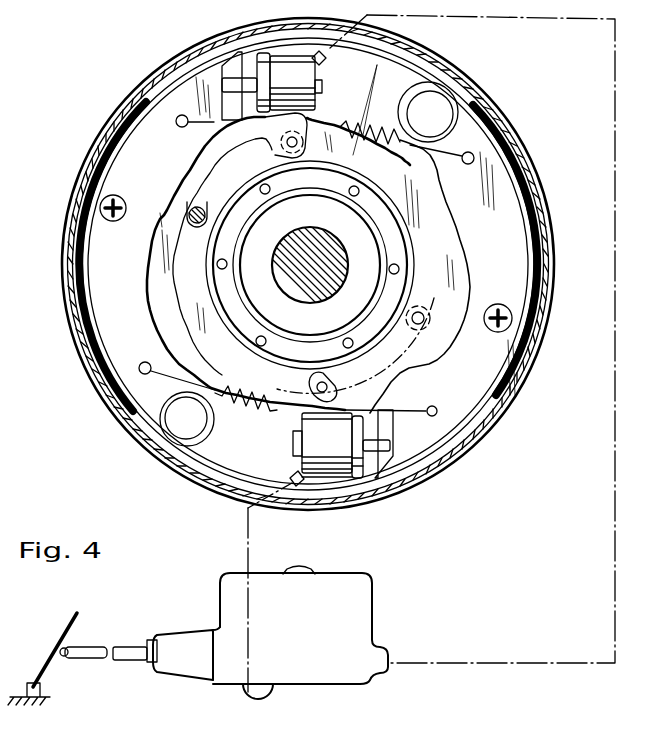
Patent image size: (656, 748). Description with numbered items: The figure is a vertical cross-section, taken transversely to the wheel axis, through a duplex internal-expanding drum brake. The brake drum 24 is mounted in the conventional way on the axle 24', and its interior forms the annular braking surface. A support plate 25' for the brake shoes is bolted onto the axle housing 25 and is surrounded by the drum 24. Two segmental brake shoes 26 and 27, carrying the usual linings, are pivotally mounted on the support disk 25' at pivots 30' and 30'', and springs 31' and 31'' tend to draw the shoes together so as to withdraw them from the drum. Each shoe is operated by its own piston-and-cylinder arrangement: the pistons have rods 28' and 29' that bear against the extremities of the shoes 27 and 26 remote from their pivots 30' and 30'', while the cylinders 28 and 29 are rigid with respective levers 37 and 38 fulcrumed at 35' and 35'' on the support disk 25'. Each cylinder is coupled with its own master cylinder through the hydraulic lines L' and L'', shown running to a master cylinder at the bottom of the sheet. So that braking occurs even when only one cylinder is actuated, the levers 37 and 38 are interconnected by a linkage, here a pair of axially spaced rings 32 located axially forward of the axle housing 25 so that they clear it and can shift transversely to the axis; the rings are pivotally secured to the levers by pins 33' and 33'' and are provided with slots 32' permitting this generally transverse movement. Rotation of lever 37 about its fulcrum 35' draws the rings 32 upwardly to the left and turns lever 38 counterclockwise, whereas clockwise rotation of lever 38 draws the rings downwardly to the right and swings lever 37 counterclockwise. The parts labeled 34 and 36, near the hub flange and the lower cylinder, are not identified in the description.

The brake drum 24 is at (319, 264).
The axle 24' is at (310, 257).
The axle housing 25 is at (308, 264).
The support plate 25' is at (251, 509).
The brake shoe 26 is at (500, 367).
The brake shoe 27 is at (145, 132).
The cylinder 28 is at (254, 62).
The piston rod 28' is at (189, 61).
The cylinder 29 is at (343, 509).
The piston rod 29' is at (410, 486).
The pivot 30' is at (469, 101).
The pivot 30'' is at (165, 446).
The spring 31' is at (376, 110).
The return spring 31'' is at (246, 414).
The rings 32 is at (347, 54).
The slot 32' is at (284, 428).
The pin 33' is at (167, 200).
The pin 33'' is at (466, 300).
The hub flange 34 is at (230, 325).
The fulcrum 35' is at (321, 120).
The fulcrum 35'' is at (296, 418).
The cylinder housing 36 is at (327, 400).
The lever 37 is at (228, 160).
The lever 38 is at (400, 373).
The line L' is at (503, 339).
The line L'' is at (275, 600).